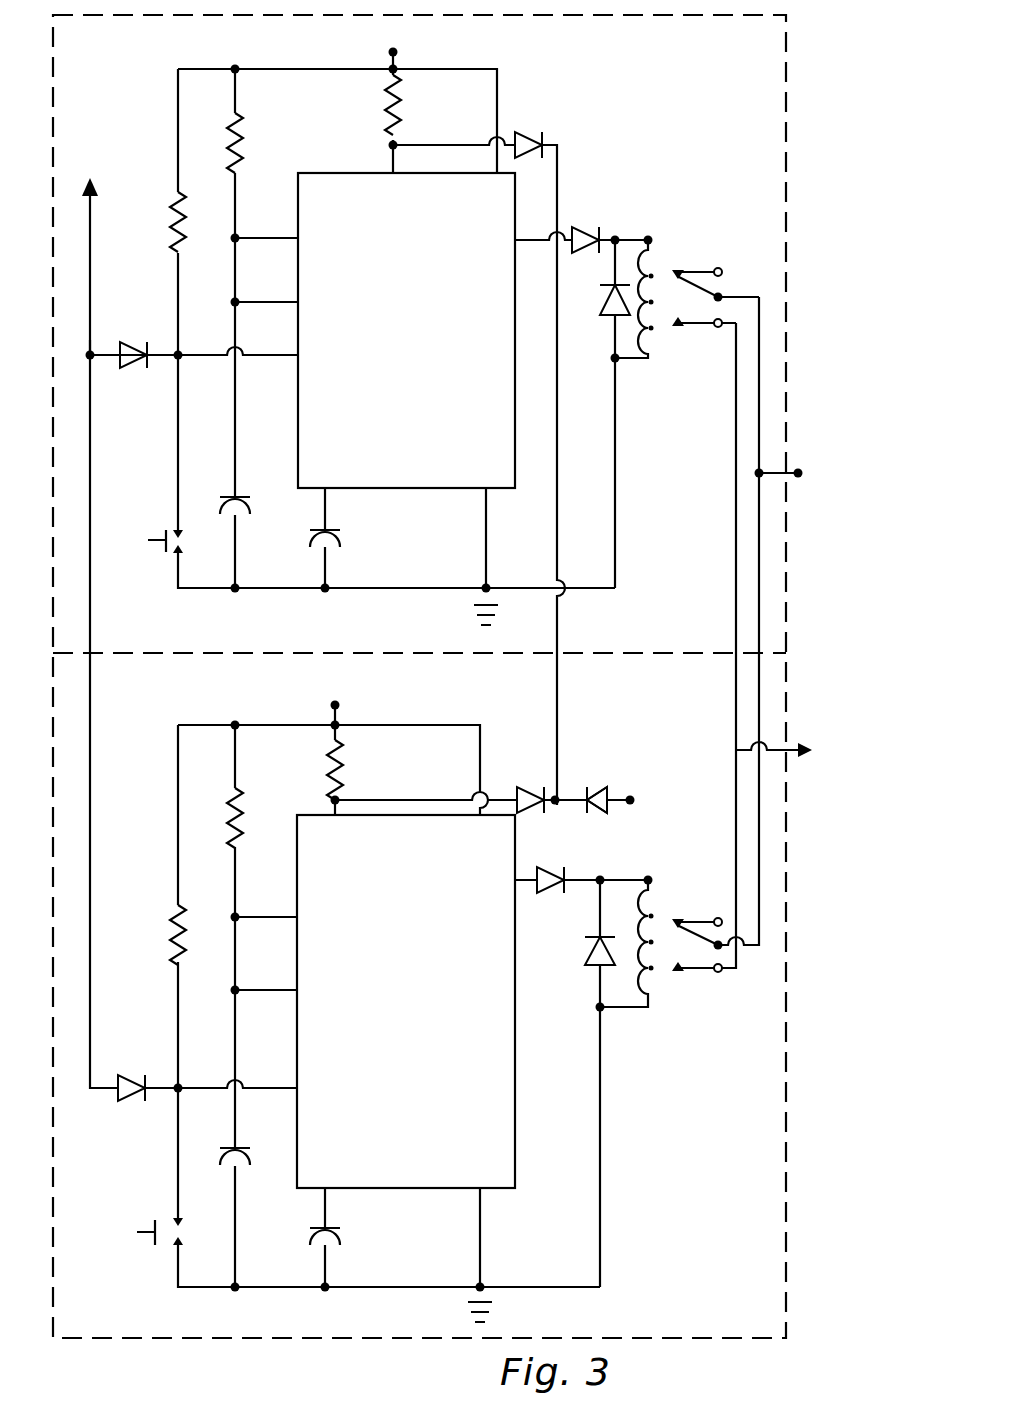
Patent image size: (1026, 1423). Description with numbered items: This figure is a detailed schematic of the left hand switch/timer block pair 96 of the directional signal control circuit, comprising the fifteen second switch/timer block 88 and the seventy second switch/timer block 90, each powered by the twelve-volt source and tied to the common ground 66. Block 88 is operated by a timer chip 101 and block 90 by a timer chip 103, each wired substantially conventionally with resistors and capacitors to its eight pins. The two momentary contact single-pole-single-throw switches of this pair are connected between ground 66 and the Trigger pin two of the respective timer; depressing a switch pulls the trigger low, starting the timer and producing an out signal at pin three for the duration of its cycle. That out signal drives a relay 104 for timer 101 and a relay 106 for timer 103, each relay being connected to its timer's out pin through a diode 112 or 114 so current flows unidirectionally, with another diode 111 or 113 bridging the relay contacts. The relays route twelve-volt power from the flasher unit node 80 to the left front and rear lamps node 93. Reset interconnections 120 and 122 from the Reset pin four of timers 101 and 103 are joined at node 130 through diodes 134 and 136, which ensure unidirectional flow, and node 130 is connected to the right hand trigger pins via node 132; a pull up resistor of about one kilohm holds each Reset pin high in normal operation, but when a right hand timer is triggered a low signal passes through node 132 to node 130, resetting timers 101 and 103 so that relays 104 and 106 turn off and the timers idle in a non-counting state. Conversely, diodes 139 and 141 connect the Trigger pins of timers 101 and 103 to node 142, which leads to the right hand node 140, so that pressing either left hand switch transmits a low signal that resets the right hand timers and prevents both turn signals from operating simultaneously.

The common ground 66 is at (475, 612).
The flasher unit node 80 is at (841, 530).
The switch/timer block 88 is at (746, 146).
The switch/timer block 90 is at (752, 1076).
The left front and rear lamps node 93 is at (857, 783).
The left hand switch/timer block pair 96 is at (795, 92).
The 555 timer chip 101 is at (415, 440).
The 555 timer chip 103 is at (400, 1073).
The relay 104 is at (660, 260).
The relay 106 is at (666, 992).
The diode 111 is at (603, 298).
The diode 112 is at (594, 228).
The diode 113 is at (585, 964).
The diode 114 is at (553, 904).
The interconnection 120 is at (546, 140).
The interconnection 122 is at (517, 780).
The node 130 is at (560, 795).
The node 132 is at (658, 804).
The diode 134 is at (520, 131).
The diode 136 is at (551, 822).
The diode 139 is at (143, 364).
The node 140 is at (106, 119).
The diode 141 is at (141, 1097).
The node 142 is at (98, 346).